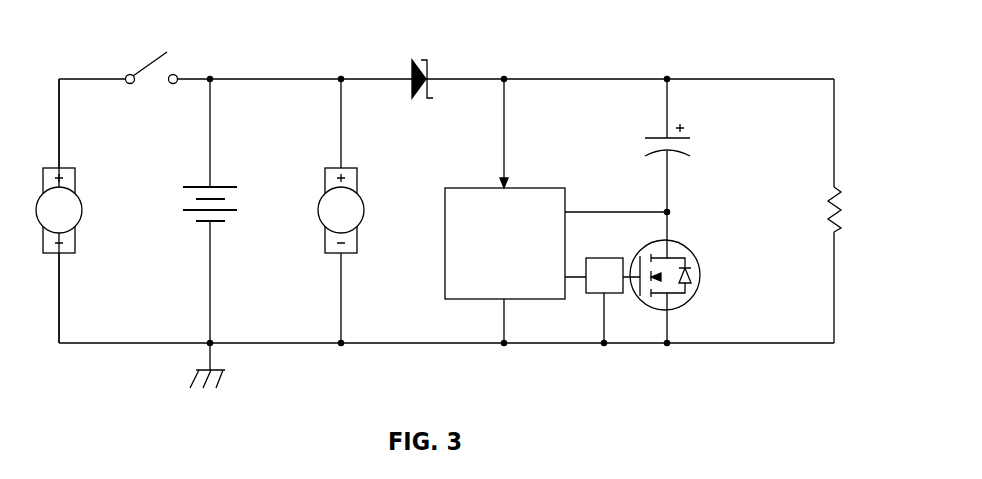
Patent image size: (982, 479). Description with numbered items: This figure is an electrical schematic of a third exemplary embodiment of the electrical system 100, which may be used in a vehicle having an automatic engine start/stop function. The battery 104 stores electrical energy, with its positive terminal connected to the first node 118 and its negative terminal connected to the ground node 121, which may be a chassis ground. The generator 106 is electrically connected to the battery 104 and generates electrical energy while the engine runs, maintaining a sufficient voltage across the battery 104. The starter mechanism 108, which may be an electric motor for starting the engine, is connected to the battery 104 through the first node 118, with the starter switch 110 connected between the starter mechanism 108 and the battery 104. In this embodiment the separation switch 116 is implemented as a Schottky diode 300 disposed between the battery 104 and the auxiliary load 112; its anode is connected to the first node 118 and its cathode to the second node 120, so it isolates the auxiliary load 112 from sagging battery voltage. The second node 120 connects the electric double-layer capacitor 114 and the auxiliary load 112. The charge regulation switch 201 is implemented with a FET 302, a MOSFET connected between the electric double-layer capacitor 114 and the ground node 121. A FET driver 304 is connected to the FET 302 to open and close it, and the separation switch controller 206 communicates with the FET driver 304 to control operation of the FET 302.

The electrical system 100 is at (787, 44).
The battery 104 is at (222, 185).
The generator 106 is at (318, 210).
The starter mechanism 108 is at (82, 210).
The starter switch 110 is at (148, 62).
The auxiliary load 112 is at (828, 213).
The electric double-layer capacitor 114 is at (657, 137).
The separation switch 116 is at (381, 81).
The first node 118 is at (341, 77).
The second node 120 is at (700, 78).
The ground node 121 is at (363, 345).
The charge regulation switch 201 is at (703, 279).
The separation switch controller 206 is at (458, 301).
The Schottky diode 300 is at (414, 97).
The FET 302 is at (700, 275).
The FET driver 304 is at (596, 297).